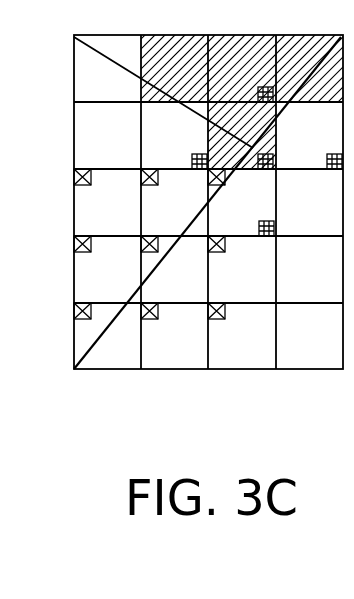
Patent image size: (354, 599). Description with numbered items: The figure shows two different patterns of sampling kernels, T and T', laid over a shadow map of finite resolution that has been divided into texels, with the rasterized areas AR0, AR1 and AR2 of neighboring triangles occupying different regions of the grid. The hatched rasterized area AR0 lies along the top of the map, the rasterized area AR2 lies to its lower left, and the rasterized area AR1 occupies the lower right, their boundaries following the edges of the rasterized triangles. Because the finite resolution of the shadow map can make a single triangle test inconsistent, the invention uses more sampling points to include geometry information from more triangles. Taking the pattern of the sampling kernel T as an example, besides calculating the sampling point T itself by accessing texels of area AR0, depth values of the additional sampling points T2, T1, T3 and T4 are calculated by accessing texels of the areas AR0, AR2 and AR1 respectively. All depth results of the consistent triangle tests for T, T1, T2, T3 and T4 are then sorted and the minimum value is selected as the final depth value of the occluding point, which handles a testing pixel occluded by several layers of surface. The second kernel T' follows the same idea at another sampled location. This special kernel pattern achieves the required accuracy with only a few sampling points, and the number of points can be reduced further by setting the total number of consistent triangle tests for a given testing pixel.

The rasterized area AR0 is at (242, 68).
The rasterized area AR1 is at (275, 302).
The rasterized area AR2 is at (107, 135).
The sampling point T1 is at (174, 135).
The sampling point T2 is at (242, 68).
The sampling point T3 is at (309, 135).
The sampling point T4 is at (242, 202).
The sampling kernel T is at (284, 176).
The sampling kernel T' is at (160, 264).